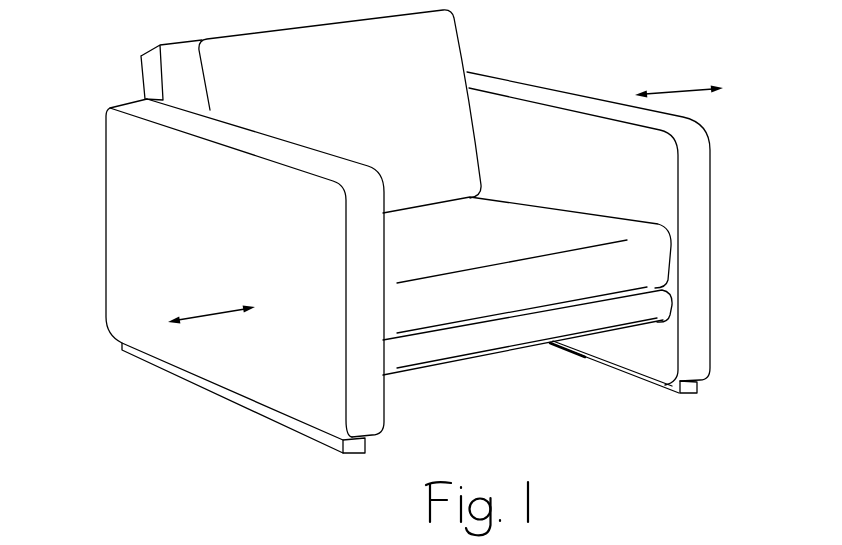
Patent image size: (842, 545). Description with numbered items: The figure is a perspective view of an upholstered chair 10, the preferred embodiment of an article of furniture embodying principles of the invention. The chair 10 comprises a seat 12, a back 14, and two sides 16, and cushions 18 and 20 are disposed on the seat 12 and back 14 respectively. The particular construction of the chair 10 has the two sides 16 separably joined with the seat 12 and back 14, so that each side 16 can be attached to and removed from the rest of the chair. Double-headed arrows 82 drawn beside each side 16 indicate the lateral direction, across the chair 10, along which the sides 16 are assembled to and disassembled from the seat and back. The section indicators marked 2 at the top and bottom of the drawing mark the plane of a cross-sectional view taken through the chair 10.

The chair 10 is at (592, 49).
The seat 12 is at (405, 355).
The back 14 is at (140, 56).
The sides 16 is at (136, 195).
The cushion 18 is at (476, 240).
The cushion 20 is at (365, 107).
The section line 2- 2 is at (152, 27).
The arrows 82 is at (681, 90).